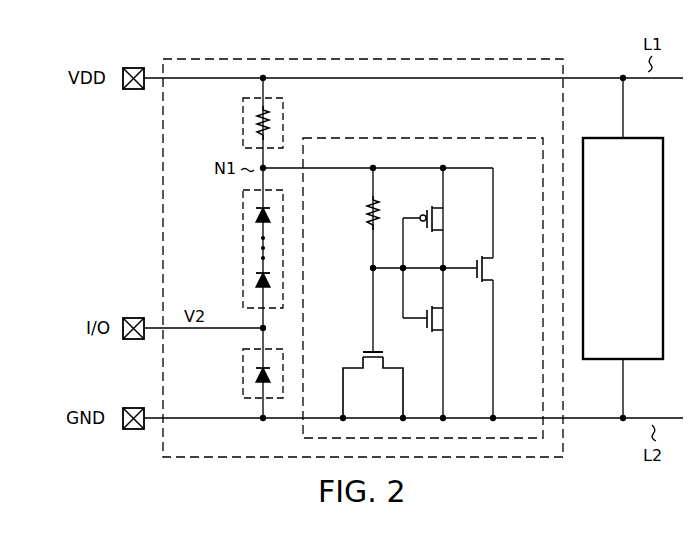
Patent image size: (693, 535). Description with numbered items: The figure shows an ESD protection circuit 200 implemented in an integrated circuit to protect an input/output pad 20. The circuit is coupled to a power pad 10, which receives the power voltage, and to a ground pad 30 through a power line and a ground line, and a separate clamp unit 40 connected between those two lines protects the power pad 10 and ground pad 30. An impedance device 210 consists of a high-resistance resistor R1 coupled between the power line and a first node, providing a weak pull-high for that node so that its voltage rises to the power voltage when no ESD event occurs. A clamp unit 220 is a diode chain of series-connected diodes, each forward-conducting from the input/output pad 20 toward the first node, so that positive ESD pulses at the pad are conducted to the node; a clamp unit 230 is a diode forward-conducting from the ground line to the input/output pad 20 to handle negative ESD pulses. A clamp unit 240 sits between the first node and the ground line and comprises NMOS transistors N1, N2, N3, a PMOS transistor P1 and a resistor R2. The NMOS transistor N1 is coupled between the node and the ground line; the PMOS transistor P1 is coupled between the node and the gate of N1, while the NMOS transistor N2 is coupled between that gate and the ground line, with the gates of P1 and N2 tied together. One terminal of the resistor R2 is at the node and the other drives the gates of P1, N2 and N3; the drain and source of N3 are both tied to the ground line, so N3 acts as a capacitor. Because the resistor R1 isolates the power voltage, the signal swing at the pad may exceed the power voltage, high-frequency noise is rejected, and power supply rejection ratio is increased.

The power pad 10 is at (134, 67).
The input/output (I/O) pad 20 is at (134, 317).
The ground pad 30 is at (134, 407).
The clamp unit 40 is at (633, 282).
The ESD protection circuit 200 is at (362, 57).
The impedance device 210 is at (249, 123).
The clamp unit 220 is at (242, 247).
The clamp unit 230 is at (242, 377).
The clamp unit 240 is at (421, 138).
The resistor R1 is at (283, 127).
The resistor R2 is at (368, 216).
The PMOS transistor P1 is at (444, 218).
The NMOS transistor N1 is at (492, 268).
The NMOS transistor N2 is at (444, 319).
The NMOS transistor N3 is at (373, 372).